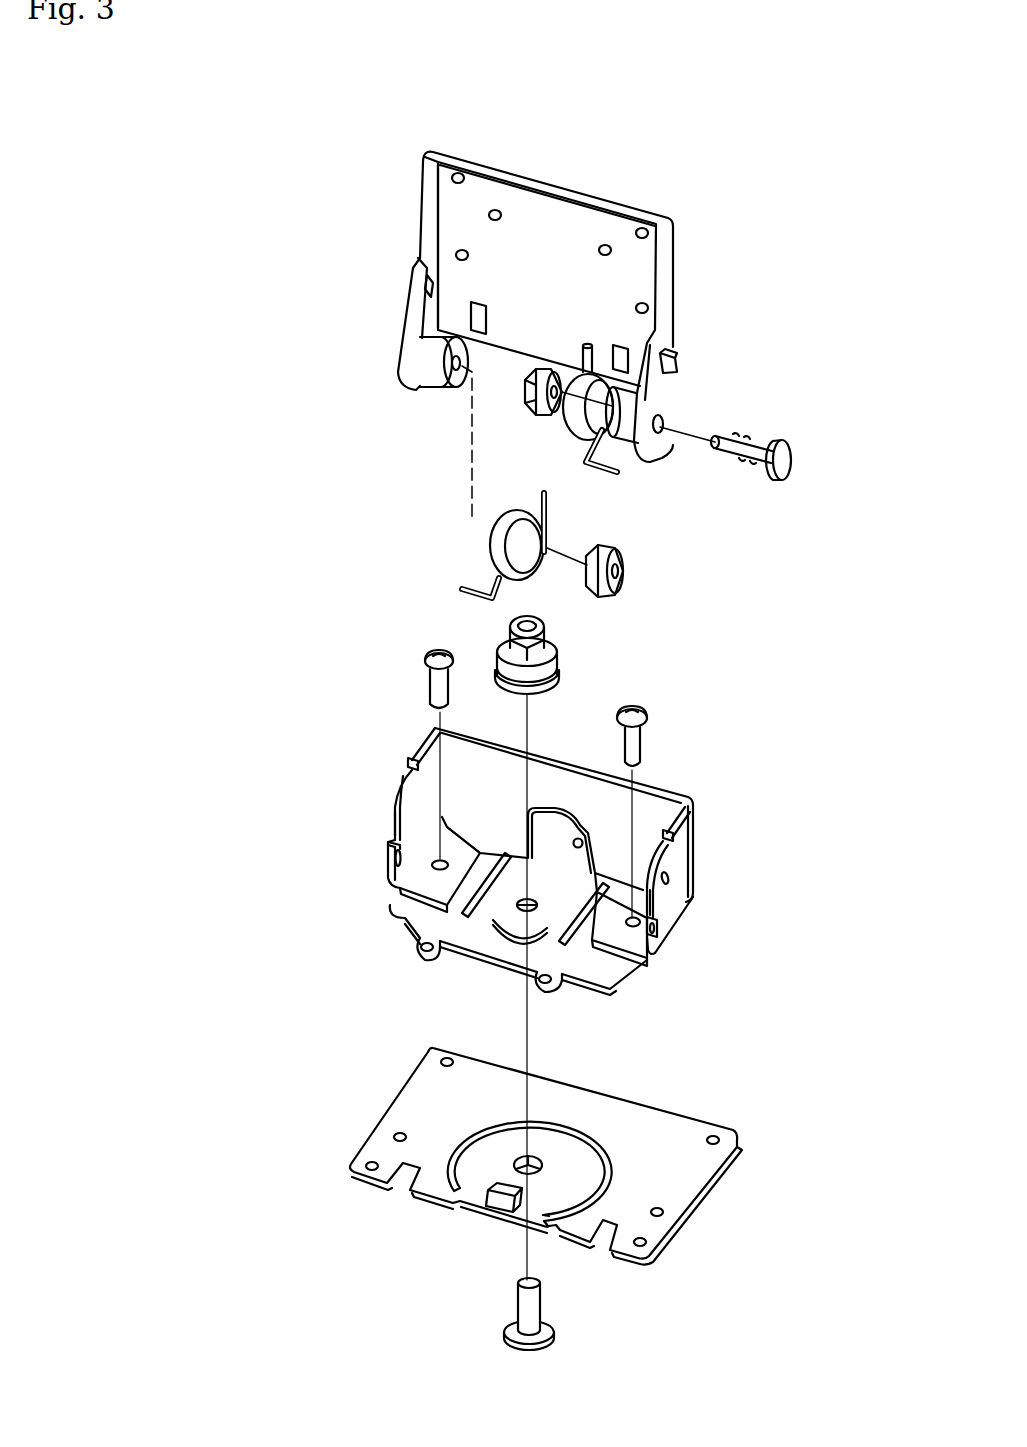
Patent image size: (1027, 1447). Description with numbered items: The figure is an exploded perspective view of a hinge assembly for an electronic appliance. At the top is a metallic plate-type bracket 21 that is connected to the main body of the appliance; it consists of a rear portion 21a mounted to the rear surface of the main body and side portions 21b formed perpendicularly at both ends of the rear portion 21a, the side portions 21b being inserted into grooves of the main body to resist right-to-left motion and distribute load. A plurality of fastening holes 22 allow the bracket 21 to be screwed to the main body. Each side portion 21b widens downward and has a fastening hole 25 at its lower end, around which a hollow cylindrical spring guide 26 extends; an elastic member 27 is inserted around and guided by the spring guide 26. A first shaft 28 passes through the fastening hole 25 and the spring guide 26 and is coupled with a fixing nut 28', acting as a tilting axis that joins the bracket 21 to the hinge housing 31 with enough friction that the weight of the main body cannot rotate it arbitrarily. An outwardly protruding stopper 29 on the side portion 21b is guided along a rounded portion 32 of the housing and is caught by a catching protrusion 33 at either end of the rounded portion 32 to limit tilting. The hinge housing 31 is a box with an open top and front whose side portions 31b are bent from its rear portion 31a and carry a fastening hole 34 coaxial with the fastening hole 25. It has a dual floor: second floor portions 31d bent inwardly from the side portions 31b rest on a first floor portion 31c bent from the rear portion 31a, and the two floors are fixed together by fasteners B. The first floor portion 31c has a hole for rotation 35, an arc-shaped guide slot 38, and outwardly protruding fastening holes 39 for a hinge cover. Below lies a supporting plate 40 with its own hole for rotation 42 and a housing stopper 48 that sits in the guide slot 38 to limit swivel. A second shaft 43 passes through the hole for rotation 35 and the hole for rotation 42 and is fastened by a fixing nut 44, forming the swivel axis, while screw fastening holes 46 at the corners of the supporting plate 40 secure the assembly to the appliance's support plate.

The bracket 21 is at (312, 192).
The rear portion 21a is at (468, 212).
The side portions 21b is at (422, 237).
The fastening holes 22 is at (496, 210).
The fastening hole 25 is at (662, 434).
The spring guide 26 is at (422, 383).
The elastic member 27 is at (572, 437).
The first shaft 28 is at (708, 436).
The fixing nut 28' is at (594, 483).
The stopper 29 is at (674, 354).
The hinge housing 31 is at (372, 876).
The rear portion 31a is at (654, 810).
The side portions 31b is at (425, 742).
The first floor portion 31c is at (398, 925).
The second floor portions 31d is at (427, 882).
The rounded portion 32 is at (398, 806).
The catching protrusion 33 is at (410, 766).
The fastening hole 34 is at (673, 866).
The hole for rotation 35 is at (527, 914).
The guide slot 38 is at (498, 926).
The fastening holes 39 is at (427, 952).
The supporting plate 40 is at (455, 1208).
The hole for rotation 42 is at (533, 1158).
The second shaft 43 is at (542, 1302).
The fixing nut 44 is at (560, 650).
The screw fastening holes 46 is at (713, 1135).
The housing stopper 48 is at (502, 1197).
The fasteners B is at (432, 690).